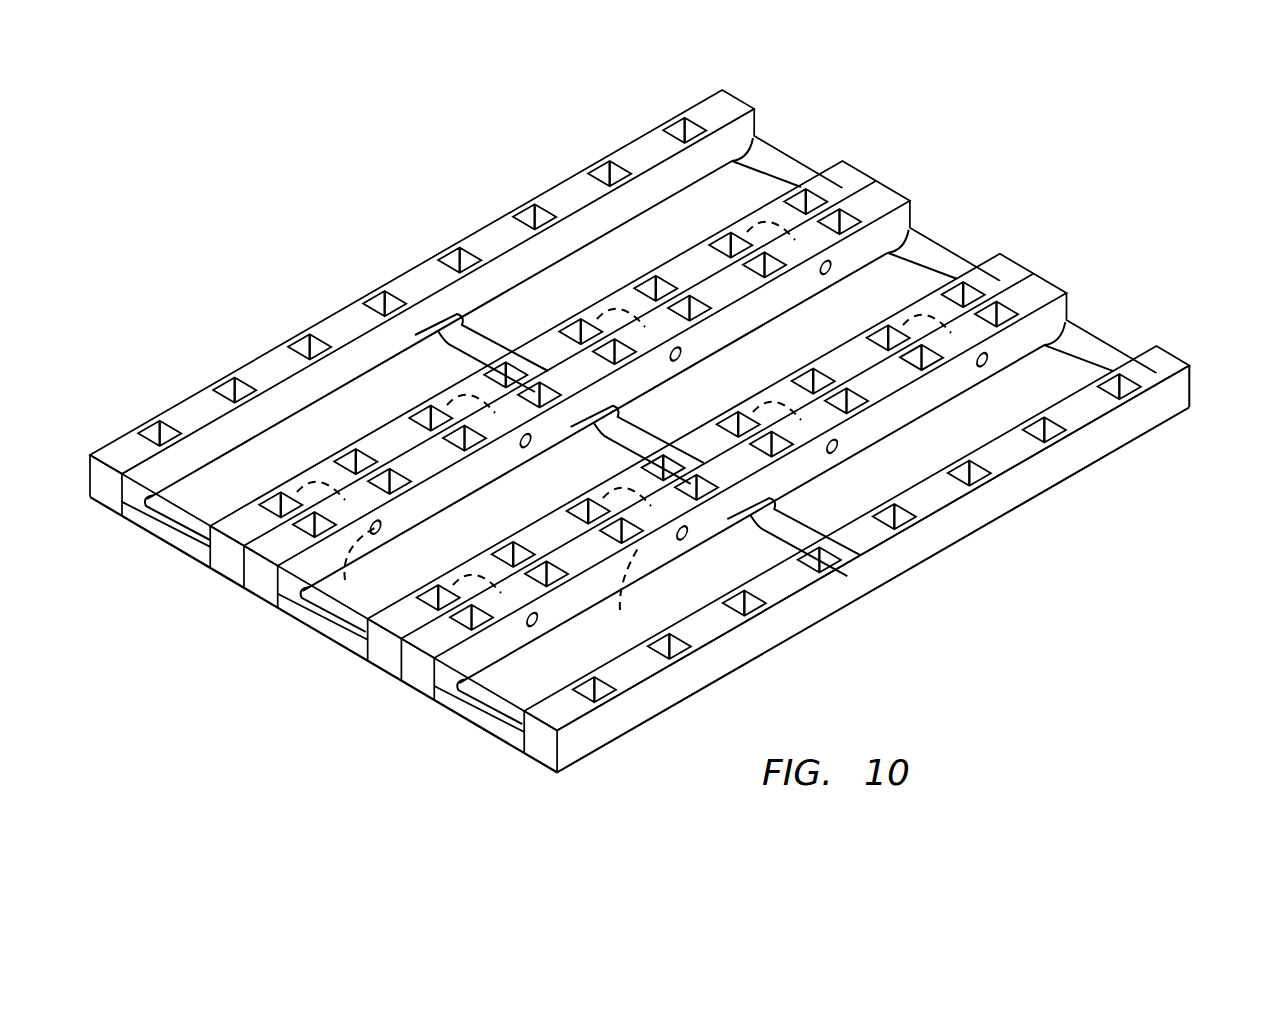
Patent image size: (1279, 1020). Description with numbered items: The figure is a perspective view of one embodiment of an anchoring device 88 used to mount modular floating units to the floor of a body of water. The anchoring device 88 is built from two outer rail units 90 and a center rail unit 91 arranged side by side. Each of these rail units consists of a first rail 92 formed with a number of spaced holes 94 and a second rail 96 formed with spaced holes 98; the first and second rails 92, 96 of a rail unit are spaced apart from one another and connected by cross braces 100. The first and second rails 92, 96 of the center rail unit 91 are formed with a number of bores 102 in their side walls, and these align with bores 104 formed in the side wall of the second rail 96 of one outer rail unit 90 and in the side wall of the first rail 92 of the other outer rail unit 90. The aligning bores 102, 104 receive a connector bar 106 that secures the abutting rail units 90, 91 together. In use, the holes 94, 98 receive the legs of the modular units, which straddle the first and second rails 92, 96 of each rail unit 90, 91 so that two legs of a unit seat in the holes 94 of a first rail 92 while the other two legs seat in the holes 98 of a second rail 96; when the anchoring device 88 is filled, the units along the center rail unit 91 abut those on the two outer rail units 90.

The anchoring device 88 is at (1135, 192).
The outer rail unit 90 is at (812, 137).
The center rail unit 91 is at (965, 230).
The first rail 92 is at (715, 96).
The spaced holes 94 is at (400, 298).
The second rail 96 is at (1002, 257).
The spaced holes 98 is at (428, 422).
The cross braces 100 is at (765, 177).
The bores 102 is at (302, 462).
The bores 104 is at (488, 584).
The connector bar 106 is at (380, 533).